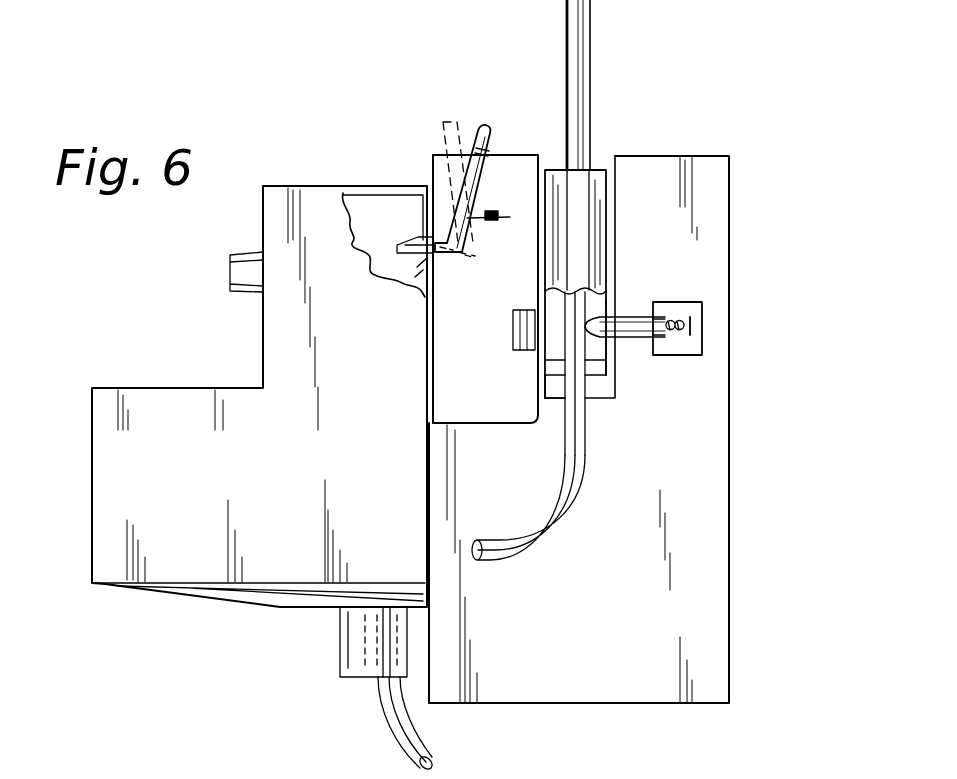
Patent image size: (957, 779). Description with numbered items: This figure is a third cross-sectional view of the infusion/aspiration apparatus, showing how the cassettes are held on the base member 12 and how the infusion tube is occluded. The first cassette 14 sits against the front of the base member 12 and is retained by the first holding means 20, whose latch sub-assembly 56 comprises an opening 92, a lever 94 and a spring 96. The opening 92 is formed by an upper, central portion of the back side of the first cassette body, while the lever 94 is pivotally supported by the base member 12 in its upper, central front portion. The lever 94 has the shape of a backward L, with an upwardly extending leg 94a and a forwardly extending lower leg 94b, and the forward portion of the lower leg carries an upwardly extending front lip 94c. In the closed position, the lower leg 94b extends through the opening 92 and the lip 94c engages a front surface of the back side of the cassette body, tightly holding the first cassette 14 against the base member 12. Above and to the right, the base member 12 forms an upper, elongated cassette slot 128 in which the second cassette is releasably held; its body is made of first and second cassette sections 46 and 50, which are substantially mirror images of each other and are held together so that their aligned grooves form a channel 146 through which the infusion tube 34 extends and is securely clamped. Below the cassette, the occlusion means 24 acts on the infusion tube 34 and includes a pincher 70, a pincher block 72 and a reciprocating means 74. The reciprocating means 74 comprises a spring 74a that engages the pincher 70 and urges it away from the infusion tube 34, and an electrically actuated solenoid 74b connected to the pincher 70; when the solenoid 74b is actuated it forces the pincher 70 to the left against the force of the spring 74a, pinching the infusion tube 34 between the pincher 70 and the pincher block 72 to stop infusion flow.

The base member 12 is at (718, 228).
The first cassette 14 is at (106, 330).
The first holding means 20 is at (375, 118).
The occlusion means 24 is at (633, 290).
The infusion tube 34 is at (580, 50).
The first cassette section 46 is at (587, 400).
The second cassette section 50 is at (541, 363).
The latch sub-assembly 56 is at (476, 272).
The pincher 70 is at (635, 323).
The pincher block 72 is at (513, 332).
The reciprocating means 74 is at (702, 288).
The spring 74a is at (680, 338).
The solenoid 74b is at (702, 325).
The opening 92 is at (405, 265).
The lever 94 is at (480, 127).
The upwardly extending leg 94a is at (480, 173).
The forwardly extending lower leg 94b is at (446, 255).
The front lip 94c is at (420, 240).
The spring 96 is at (490, 222).
The cassette slot 128 is at (552, 405).
The channel 146 is at (587, 360).